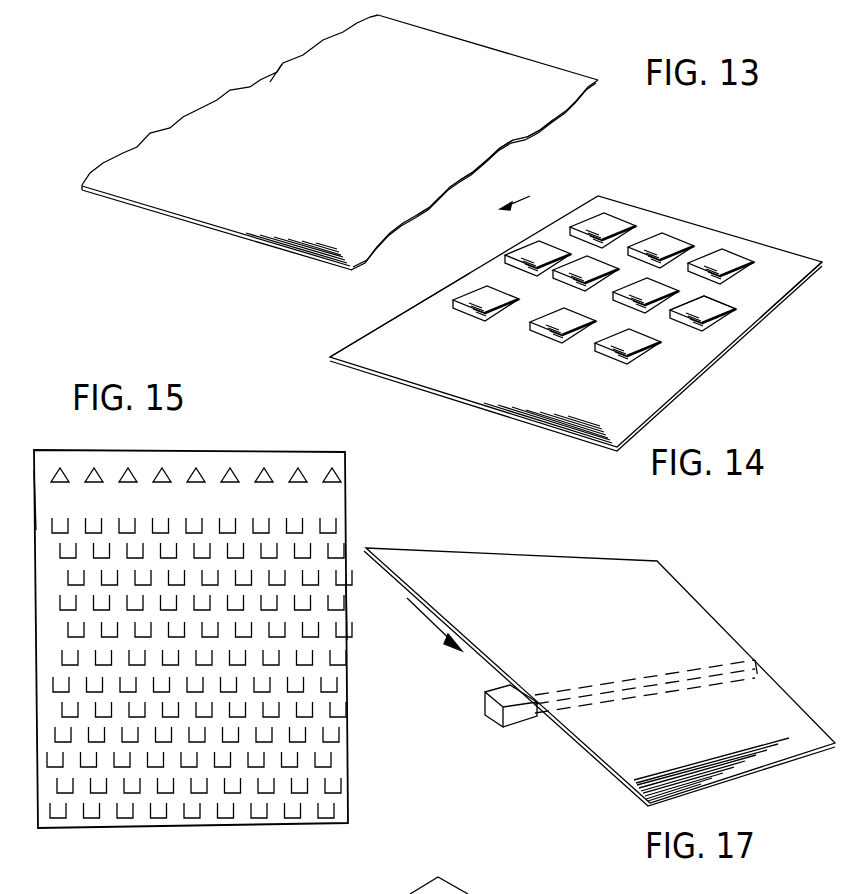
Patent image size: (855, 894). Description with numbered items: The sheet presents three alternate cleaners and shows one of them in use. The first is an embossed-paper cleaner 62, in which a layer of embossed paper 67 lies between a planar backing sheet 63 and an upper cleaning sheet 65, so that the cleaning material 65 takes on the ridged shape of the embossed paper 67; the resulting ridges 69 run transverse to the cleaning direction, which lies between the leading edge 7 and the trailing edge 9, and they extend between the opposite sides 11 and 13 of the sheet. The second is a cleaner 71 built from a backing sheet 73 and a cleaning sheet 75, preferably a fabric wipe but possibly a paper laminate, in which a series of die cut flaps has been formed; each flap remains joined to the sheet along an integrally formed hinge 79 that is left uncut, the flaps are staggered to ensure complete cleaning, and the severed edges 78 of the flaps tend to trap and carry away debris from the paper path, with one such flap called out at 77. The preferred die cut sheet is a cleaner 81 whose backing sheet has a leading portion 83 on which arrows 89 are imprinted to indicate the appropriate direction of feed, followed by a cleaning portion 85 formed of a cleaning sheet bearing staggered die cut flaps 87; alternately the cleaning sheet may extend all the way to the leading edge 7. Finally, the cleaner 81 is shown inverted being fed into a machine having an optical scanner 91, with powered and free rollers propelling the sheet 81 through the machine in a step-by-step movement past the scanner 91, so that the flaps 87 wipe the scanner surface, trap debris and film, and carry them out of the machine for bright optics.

In FIG. 13, the leading edge 7 is at (531, 60).
In FIG. 13, the trailing edge 9 is at (212, 226).
In FIG. 13, the side 11 is at (261, 80).
In FIG. 13, the side 13 is at (458, 180).
In FIG. 13, the cleaner 62 is at (529, 194).
In FIG. 13, the backing sheet 63 is at (528, 137).
In FIG. 13, the cleaning sheet 65 is at (558, 95).
In FIG. 13, the embossed paper 67 is at (418, 212).
In FIG. 13, the ridges 69 is at (282, 72).
In FIG. 14, the cleaner 71 is at (471, 276).
In FIG. 14, the backing sheet 73 is at (789, 288).
In FIG. 14, the cleaning sheet 75 is at (733, 243).
In FIG. 14, the flap 77 is at (712, 318).
In FIG. 14, the severed edges 78 is at (630, 364).
In FIG. 14, the hinges 79 is at (702, 298).
In FIG. 15, the cleaner 81 is at (348, 718).
In FIG. 17, the cleaner 81 is at (778, 675).
In FIG. 15, the leading portion 83 is at (36, 513).
In FIG. 15, the cleaning portion 85 is at (348, 620).
In FIG. 15, the die cut flaps 87 is at (326, 528).
In FIG. 15, the arrows 89 is at (229, 472).
In FIG. 17, the optical scanner 91 is at (496, 700).